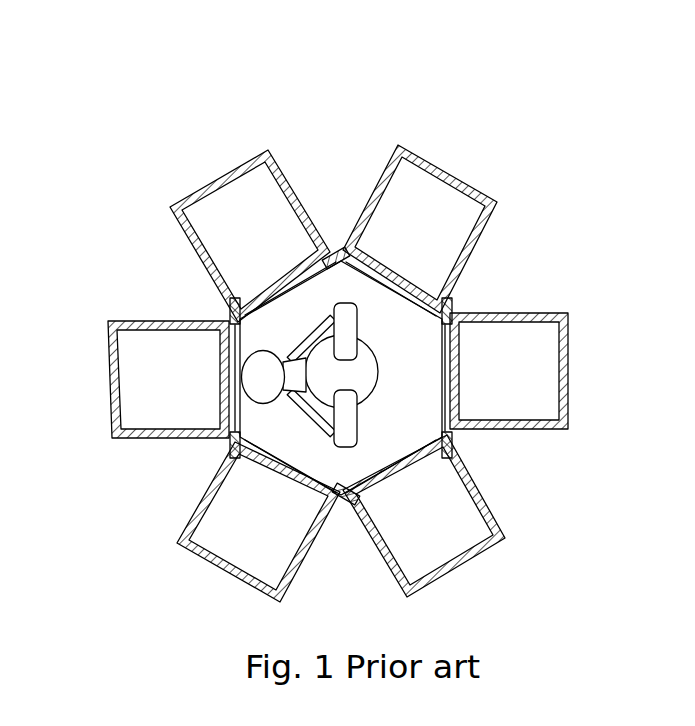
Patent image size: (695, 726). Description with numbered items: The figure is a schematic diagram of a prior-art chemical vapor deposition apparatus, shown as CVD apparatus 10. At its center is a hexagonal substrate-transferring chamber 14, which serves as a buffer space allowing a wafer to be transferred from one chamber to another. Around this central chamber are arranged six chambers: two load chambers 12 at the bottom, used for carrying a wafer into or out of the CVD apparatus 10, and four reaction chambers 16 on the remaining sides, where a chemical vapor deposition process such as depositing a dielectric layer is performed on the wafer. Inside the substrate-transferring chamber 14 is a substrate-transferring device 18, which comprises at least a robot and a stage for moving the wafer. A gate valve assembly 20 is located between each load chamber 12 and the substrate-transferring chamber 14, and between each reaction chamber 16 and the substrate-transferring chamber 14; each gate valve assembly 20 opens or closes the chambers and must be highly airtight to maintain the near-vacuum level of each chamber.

The CVD apparatus 10 is at (498, 58).
The load chamber 12 is at (170, 518).
The substrate-transferring chamber 14 is at (428, 320).
The reaction chamber 16 is at (245, 135).
The substrate-transferring device 18 is at (340, 462).
The gate valve assembly 20 is at (298, 258).